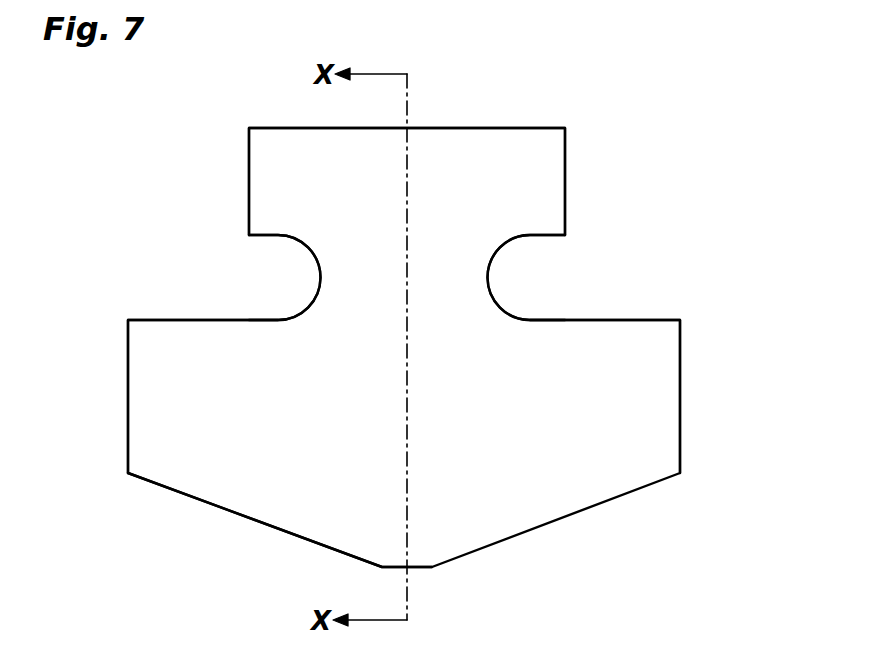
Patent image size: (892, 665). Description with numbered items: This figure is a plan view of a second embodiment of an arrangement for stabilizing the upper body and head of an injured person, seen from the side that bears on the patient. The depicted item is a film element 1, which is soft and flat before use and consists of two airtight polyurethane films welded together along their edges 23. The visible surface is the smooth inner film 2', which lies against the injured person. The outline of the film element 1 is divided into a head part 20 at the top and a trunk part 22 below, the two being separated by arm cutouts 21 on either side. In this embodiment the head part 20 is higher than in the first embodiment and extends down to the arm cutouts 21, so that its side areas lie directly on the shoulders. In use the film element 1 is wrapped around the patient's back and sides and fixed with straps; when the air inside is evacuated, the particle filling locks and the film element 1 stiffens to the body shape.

The film element 1 is at (538, 498).
The head part 20 is at (493, 158).
The arm cutouts 21 is at (295, 258).
The trunk part 22 is at (620, 358).
The edges 23 is at (200, 320).
The film 2' is at (280, 532).